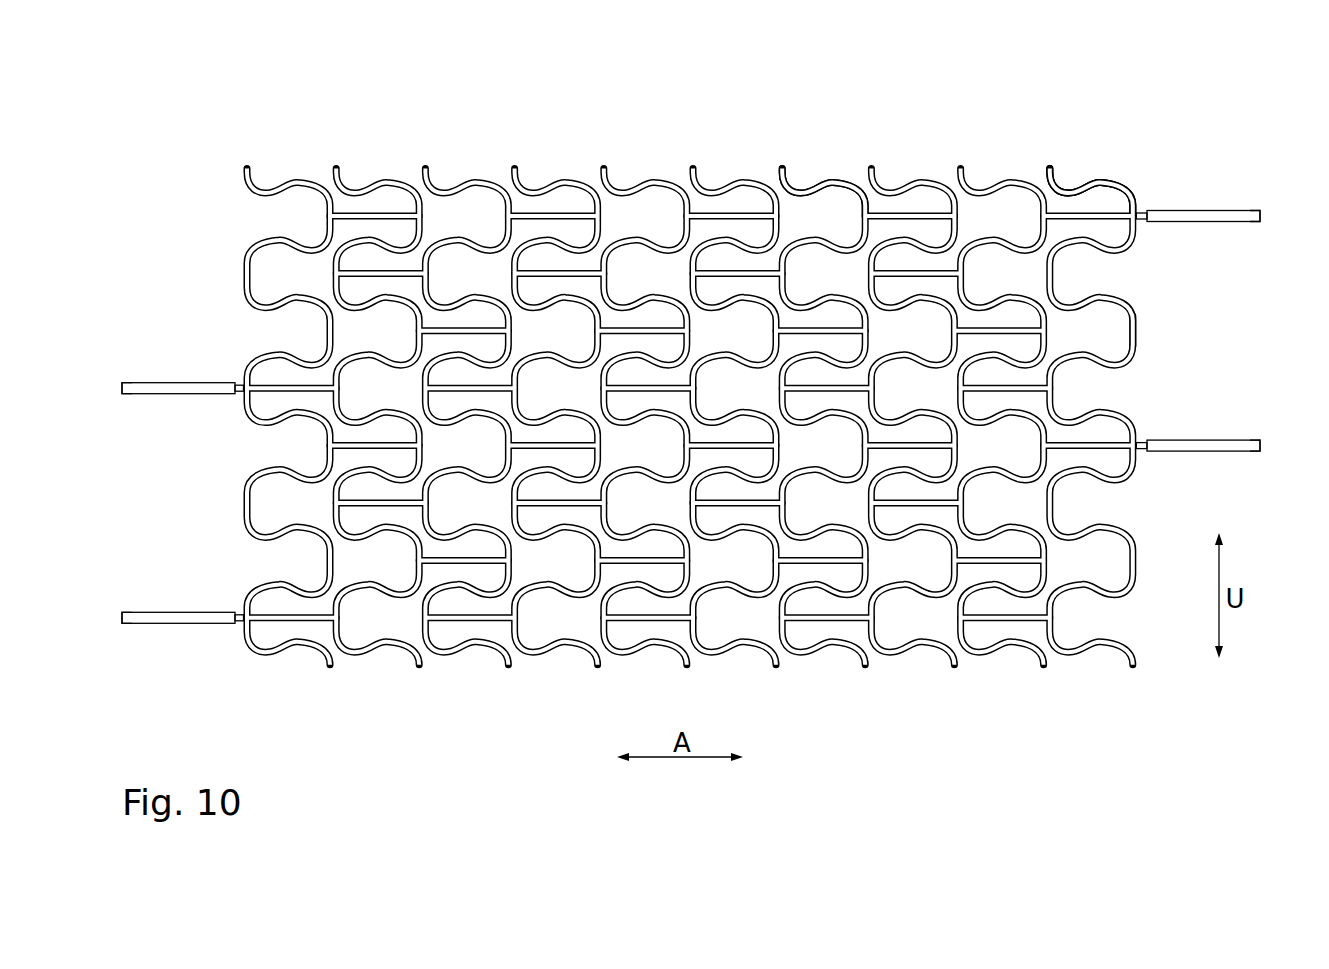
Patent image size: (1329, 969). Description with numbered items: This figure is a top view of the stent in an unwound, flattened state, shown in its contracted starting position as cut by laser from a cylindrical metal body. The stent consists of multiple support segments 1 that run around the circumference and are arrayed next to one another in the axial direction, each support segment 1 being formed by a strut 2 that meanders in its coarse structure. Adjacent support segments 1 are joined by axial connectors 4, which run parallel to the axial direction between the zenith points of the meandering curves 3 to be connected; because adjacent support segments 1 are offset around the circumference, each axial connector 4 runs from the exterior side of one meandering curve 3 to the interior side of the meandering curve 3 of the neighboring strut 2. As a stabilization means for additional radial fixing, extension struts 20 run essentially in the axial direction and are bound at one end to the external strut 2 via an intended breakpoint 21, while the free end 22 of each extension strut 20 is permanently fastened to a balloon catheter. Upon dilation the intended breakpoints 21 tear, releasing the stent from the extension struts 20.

The support segment 1 is at (904, 156).
The strut 2 is at (843, 163).
The meandering curve 3 is at (1113, 183).
The axial connector 4 is at (762, 274).
The extension strut 20 is at (152, 386).
The intended breakpoint 21 is at (242, 384).
The free end 22 is at (156, 408).